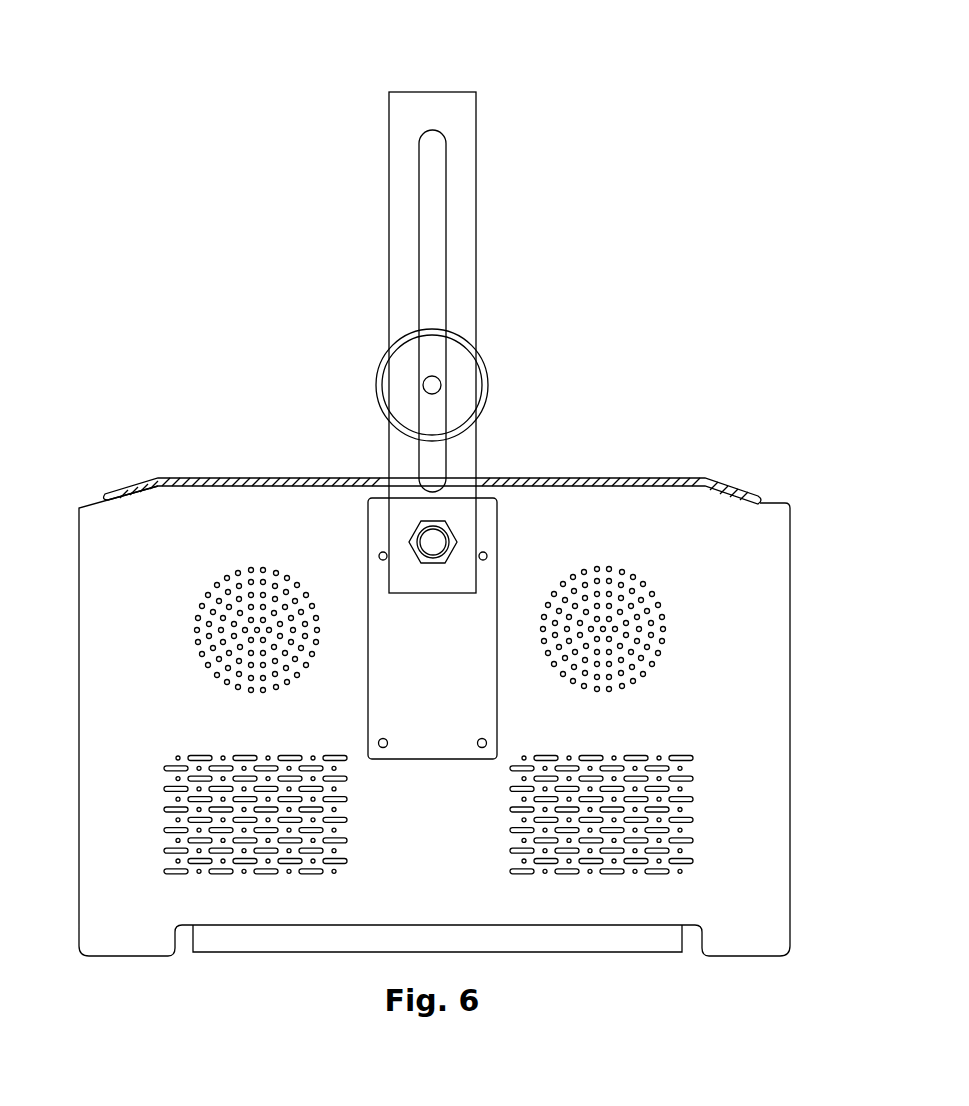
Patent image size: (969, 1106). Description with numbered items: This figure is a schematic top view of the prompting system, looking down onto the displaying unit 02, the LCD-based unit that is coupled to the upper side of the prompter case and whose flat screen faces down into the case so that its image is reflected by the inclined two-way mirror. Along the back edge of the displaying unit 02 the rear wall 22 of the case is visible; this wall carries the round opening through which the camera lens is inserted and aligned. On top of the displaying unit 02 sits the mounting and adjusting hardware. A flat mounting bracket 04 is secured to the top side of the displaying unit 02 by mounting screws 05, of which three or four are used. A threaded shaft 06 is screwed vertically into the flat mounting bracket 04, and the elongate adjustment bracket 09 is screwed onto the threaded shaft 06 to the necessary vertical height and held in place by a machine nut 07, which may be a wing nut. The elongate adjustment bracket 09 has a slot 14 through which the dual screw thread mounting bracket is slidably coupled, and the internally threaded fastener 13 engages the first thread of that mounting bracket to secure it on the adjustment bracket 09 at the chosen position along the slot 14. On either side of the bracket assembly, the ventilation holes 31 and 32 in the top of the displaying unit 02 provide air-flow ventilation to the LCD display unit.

The displaying unit 02 is at (110, 537).
The flat mounting bracket 04 is at (482, 678).
The mounting screws 05 is at (383, 556).
The threaded shaft 06 is at (430, 545).
The machine nut 07 is at (450, 535).
The elongate adjustment bracket 09 is at (453, 117).
The internally threaded fastener 13 is at (450, 389).
The slot 14 is at (428, 240).
The rear wall 22 is at (691, 479).
The ventilation holes 31 is at (670, 637).
The ventilation holes 32 is at (710, 812).